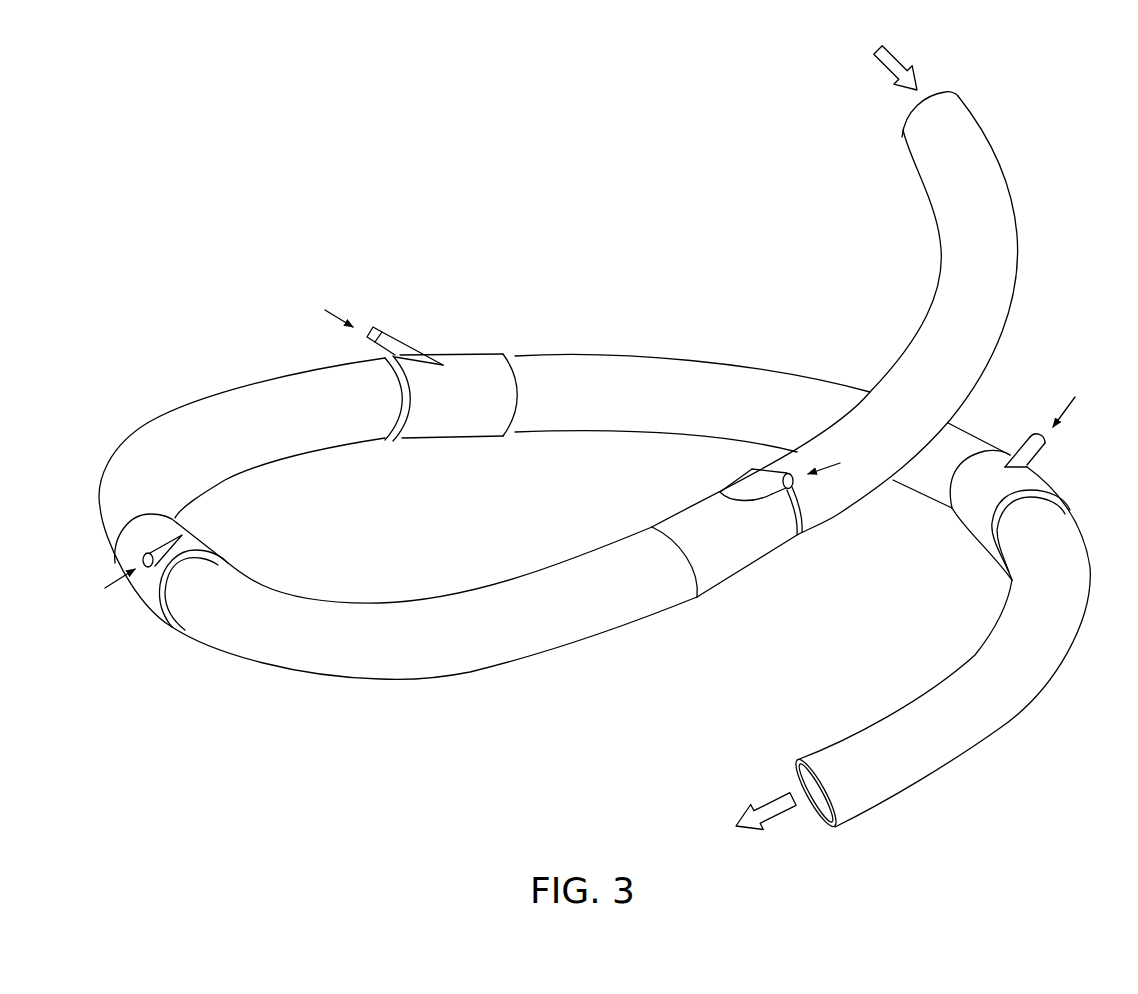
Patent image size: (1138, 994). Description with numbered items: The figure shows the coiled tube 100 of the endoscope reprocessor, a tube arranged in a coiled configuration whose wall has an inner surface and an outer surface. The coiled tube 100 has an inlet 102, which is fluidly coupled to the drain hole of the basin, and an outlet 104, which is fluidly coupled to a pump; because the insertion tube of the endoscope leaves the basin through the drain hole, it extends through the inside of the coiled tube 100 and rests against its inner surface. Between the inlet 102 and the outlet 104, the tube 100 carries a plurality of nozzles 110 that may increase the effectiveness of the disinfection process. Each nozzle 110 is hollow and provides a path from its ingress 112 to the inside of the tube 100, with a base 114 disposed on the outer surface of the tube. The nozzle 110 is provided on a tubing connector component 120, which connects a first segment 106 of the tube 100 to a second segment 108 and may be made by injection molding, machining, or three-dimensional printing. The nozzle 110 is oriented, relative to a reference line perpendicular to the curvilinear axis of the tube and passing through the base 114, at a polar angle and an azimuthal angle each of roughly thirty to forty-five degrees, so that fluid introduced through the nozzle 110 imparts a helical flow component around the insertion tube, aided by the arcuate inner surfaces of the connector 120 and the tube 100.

The coiled tube 100 is at (637, 156).
The inlet 102 is at (953, 93).
The outlet 104 is at (818, 826).
The first segment 106 is at (1013, 182).
The second segment 108 is at (577, 562).
The nozzle 110 is at (400, 340).
The ingress 112 is at (147, 580).
The base 114 is at (737, 503).
The tubing connector component 120 is at (472, 339).